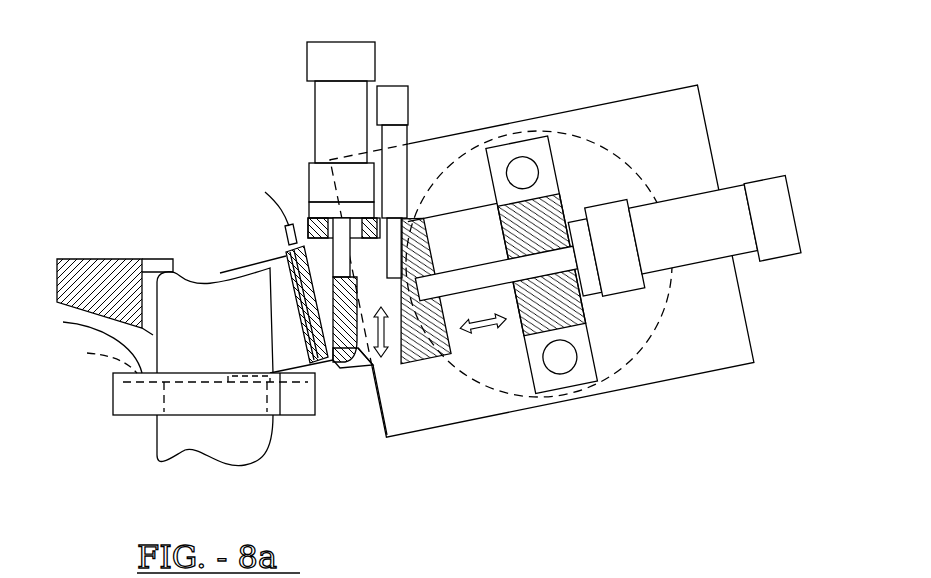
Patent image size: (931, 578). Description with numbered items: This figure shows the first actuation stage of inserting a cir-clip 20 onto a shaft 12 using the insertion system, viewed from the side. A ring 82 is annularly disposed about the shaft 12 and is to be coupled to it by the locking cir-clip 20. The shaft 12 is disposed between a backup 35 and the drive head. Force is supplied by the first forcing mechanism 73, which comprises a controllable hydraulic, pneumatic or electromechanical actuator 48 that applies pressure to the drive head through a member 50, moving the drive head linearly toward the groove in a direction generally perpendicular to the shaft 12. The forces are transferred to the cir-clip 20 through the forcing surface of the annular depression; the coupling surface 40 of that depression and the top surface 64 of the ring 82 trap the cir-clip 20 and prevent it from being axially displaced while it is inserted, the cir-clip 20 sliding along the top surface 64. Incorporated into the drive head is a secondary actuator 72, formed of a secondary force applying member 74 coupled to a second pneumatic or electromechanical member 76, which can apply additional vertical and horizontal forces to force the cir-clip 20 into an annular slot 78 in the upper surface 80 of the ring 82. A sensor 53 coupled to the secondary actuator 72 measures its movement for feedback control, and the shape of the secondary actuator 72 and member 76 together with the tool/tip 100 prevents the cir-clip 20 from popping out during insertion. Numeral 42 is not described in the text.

The shaft 12 is at (260, 457).
The cir-clip 20 is at (328, 372).
The backup 35 is at (108, 259).
The coupling surface 40 is at (257, 382).
The pin 42 is at (238, 193).
The controllable hydraulic, pneumatic or electromechanical actuator 48 is at (772, 188).
The member 50 is at (487, 280).
The sensor 53 is at (400, 103).
The top surface 64 is at (88, 341).
The secondary actuator 72 is at (386, 143).
The first forcing mechanism 73 is at (688, 113).
The secondary force applying member 74 is at (372, 365).
The second pneumatic or electromechanical member 76 is at (367, 55).
The annular slot 78 is at (96, 356).
The upper surface 80 is at (117, 370).
The ring 82 is at (295, 402).
The tool/tip 100 is at (362, 353).